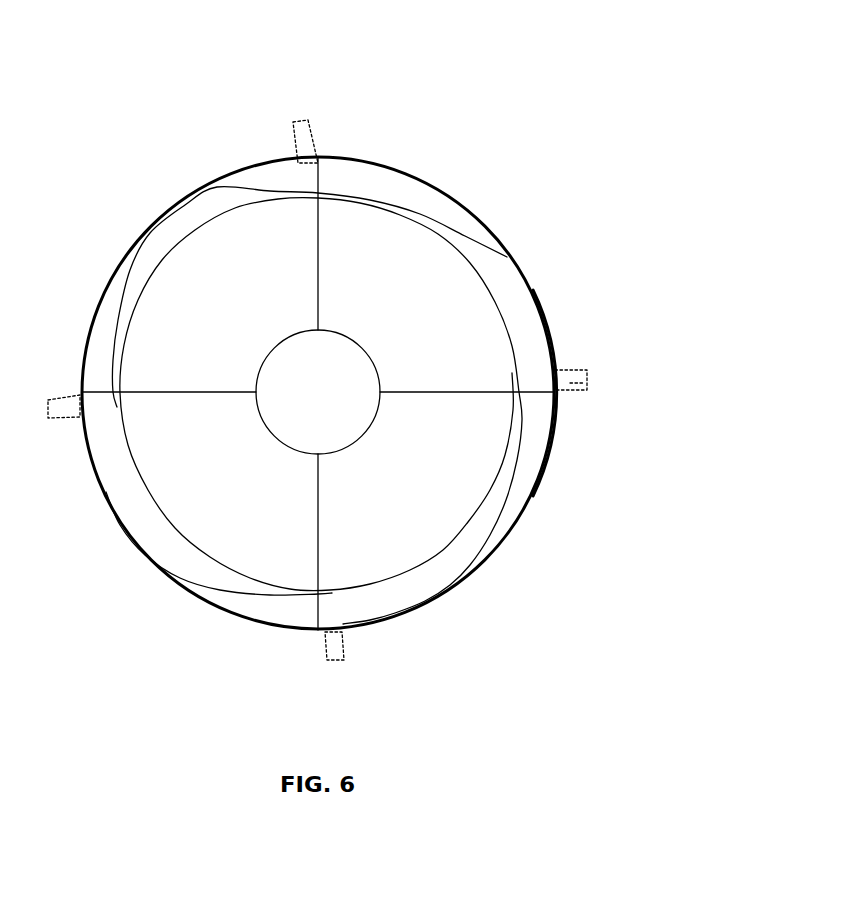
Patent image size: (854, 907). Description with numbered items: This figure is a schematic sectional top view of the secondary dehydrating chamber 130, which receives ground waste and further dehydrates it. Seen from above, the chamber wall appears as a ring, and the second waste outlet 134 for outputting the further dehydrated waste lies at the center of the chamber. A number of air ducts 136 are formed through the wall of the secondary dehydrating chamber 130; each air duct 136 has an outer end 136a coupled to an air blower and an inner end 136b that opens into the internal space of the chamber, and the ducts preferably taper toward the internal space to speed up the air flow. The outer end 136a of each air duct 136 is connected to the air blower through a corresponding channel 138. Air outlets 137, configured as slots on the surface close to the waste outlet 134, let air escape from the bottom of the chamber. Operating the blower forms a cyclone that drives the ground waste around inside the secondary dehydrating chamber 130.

The secondary dehydrating chamber 130 is at (170, 95).
The second waste outlet 134 is at (342, 399).
The air duct 136 is at (498, 277).
The outer end 136a is at (546, 379).
The inner end 136b is at (262, 193).
The air outlet 137 is at (428, 397).
The channel 138 is at (586, 383).